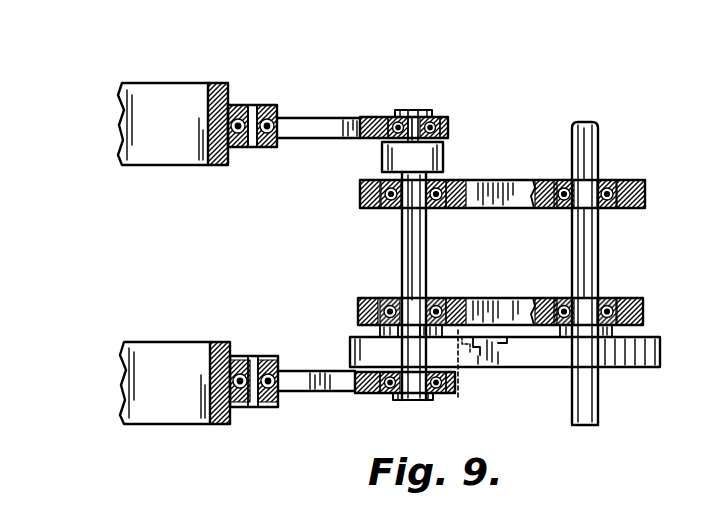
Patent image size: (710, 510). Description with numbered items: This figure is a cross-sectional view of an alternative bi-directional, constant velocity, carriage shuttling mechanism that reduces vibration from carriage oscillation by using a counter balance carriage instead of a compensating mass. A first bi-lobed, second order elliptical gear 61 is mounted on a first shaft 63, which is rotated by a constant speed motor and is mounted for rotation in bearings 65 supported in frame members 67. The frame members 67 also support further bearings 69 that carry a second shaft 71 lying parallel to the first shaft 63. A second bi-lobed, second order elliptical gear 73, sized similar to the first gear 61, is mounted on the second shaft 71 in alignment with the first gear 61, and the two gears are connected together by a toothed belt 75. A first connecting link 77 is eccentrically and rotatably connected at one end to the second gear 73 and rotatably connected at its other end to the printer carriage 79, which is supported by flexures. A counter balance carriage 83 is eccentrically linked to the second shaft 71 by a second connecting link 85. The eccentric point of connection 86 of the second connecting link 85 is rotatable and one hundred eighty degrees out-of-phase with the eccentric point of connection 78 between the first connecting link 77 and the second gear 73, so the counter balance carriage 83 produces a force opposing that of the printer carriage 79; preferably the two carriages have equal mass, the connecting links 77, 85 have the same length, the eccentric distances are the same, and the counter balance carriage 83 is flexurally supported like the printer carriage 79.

The first bi-lobed, second order elliptical gear 61 is at (503, 350).
The first shaft 63 is at (593, 243).
The bearings 65 is at (610, 184).
The frame members 67 is at (645, 192).
The further bearings 69 is at (440, 182).
The second shaft 71 is at (422, 242).
The second bi-lobed, second order elliptical gear 73 is at (450, 403).
The toothed belt 75 is at (485, 357).
The first connecting link 77 is at (323, 371).
The eccentric point of connection 78 is at (397, 400).
The carriage 79 is at (168, 347).
The counter balance carriage 83 is at (187, 92).
The second connecting link 85 is at (333, 118).
The eccentric point of connection 86 is at (418, 110).